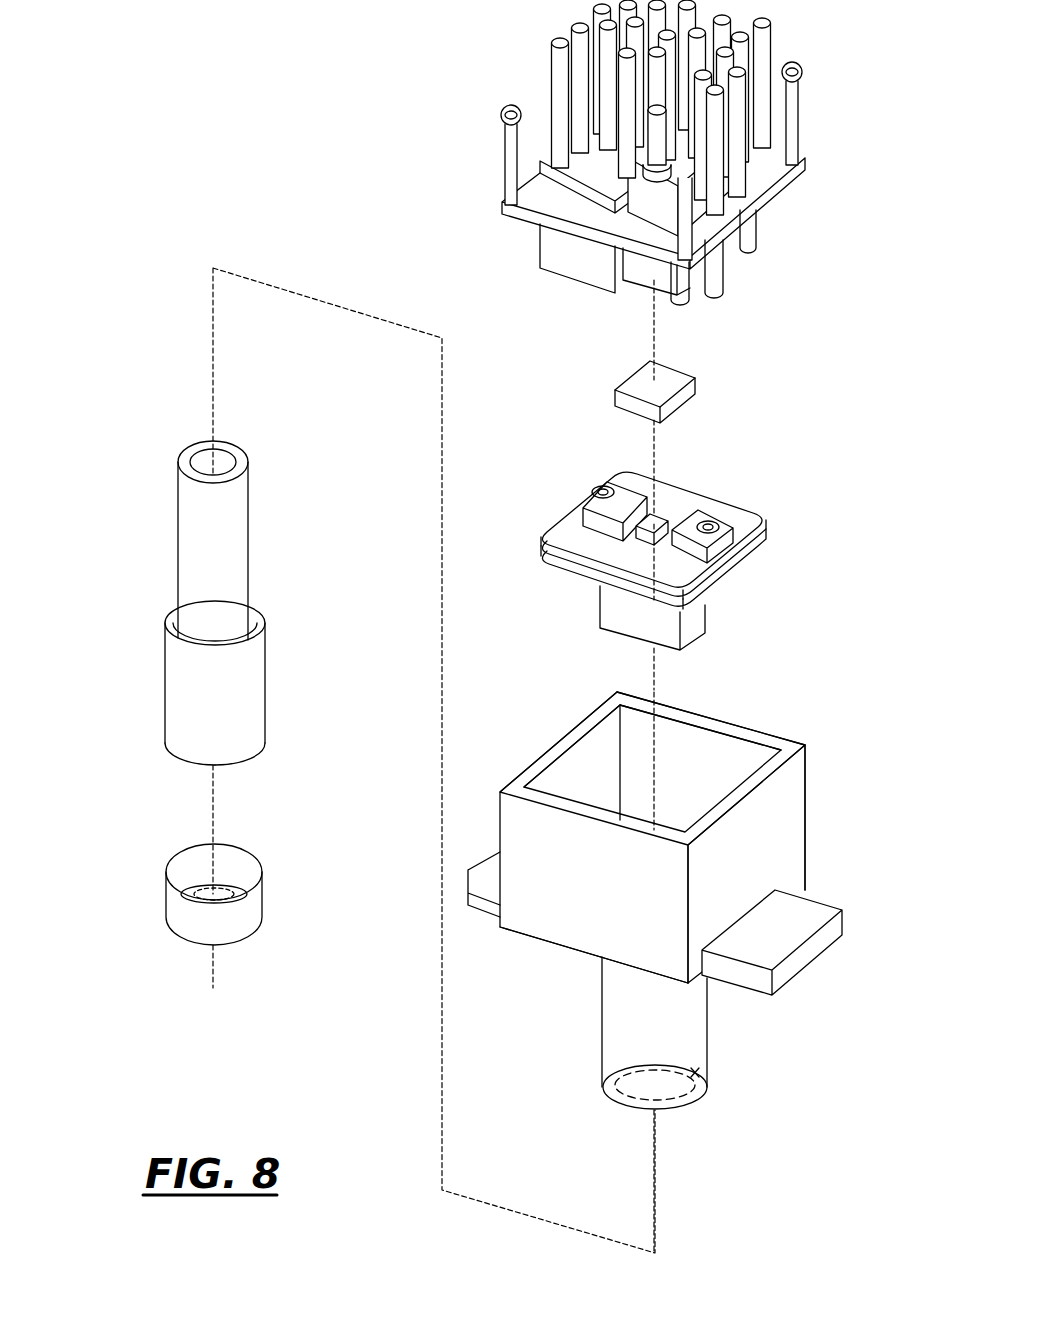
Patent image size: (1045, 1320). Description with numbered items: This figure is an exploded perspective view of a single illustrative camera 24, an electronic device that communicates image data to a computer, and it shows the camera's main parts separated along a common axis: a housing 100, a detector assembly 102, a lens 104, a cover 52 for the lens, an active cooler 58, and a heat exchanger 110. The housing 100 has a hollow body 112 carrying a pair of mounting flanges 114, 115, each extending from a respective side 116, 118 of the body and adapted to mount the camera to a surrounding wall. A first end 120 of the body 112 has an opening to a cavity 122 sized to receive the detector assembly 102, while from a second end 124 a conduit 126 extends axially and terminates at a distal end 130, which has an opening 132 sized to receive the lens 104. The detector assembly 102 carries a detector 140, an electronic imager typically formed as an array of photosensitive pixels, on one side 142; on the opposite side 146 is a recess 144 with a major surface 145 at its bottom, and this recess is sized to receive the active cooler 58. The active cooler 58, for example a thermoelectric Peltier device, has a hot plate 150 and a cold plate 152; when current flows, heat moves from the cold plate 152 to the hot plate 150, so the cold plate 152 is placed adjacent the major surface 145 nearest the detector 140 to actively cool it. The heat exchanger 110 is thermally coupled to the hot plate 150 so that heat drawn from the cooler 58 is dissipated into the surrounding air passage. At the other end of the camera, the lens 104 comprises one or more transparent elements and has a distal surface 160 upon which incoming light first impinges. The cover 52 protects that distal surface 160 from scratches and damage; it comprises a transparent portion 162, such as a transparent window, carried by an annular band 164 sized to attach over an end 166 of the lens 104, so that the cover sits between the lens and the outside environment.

The camera 24 is at (129, 173).
The cover 52 is at (252, 884).
The active cooler 58 is at (687, 383).
The housing 100 is at (699, 891).
The detector assembly 102 is at (688, 538).
The lens 104 is at (273, 624).
The heat exchanger 110 is at (827, 161).
The hollow body 112 is at (687, 816).
The mounting flange 114 is at (808, 922).
The mounting flange 115 is at (490, 872).
The side 116 is at (748, 875).
The side 118 is at (545, 757).
The first end 120 is at (775, 747).
The cavity 122 is at (720, 757).
The second end 124 is at (567, 950).
The conduit 126 is at (627, 1015).
The distal end 130 is at (627, 1108).
The opening 132 is at (698, 1068).
The detector 140 is at (717, 592).
The side 142 is at (583, 586).
The recess 144 is at (650, 534).
The major surface 145 is at (666, 530).
The opposite side 146 is at (734, 518).
The hot plate 150 is at (663, 380).
The cold plate 152 is at (645, 420).
The distal surface 160 is at (235, 762).
The transparent portion 162 is at (205, 898).
The annular band 164 is at (259, 868).
The end 166 is at (252, 745).